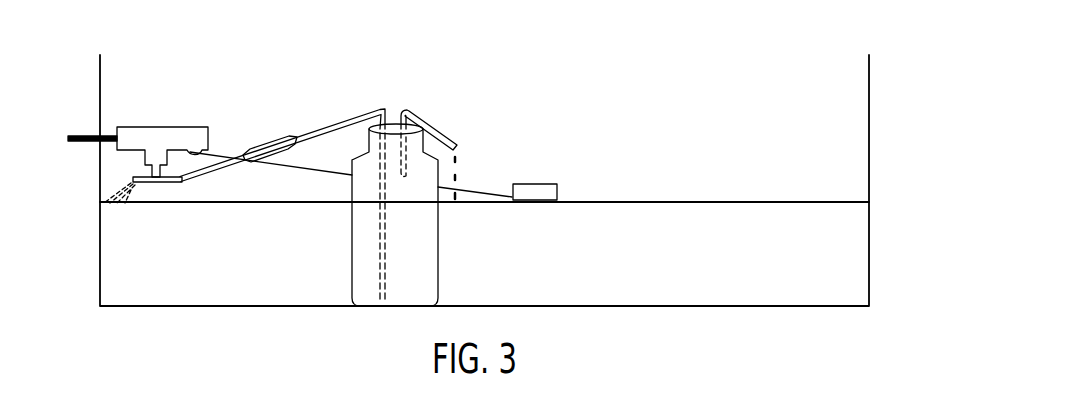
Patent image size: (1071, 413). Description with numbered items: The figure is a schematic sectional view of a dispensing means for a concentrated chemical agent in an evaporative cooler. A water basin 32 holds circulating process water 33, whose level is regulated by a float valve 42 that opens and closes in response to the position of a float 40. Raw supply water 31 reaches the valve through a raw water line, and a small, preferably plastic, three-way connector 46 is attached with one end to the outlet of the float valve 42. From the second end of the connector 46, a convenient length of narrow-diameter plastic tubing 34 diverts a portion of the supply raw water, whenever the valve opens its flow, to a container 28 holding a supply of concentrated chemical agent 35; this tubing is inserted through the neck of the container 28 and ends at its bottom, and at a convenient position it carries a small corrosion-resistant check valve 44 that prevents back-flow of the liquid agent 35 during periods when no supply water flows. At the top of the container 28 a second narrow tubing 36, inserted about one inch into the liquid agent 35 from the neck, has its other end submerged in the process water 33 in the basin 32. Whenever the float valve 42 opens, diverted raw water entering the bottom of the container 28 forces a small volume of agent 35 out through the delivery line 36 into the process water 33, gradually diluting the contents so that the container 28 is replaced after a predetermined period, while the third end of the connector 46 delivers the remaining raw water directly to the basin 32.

The concentrated chemical agent container 28 is at (438, 230).
The raw water line 31 is at (90, 135).
The water basin 32 is at (100, 268).
The circulating process water 33 is at (262, 278).
The raw water flow line to concentrated chemical agent container 34 is at (346, 116).
The concentrated chemical agent 35 is at (422, 273).
The delivery line for chemical agent 36 is at (451, 134).
The float 40 is at (533, 184).
The float valve 42 is at (210, 138).
The check valve 44 is at (263, 146).
The three-way connector 46 is at (160, 183).